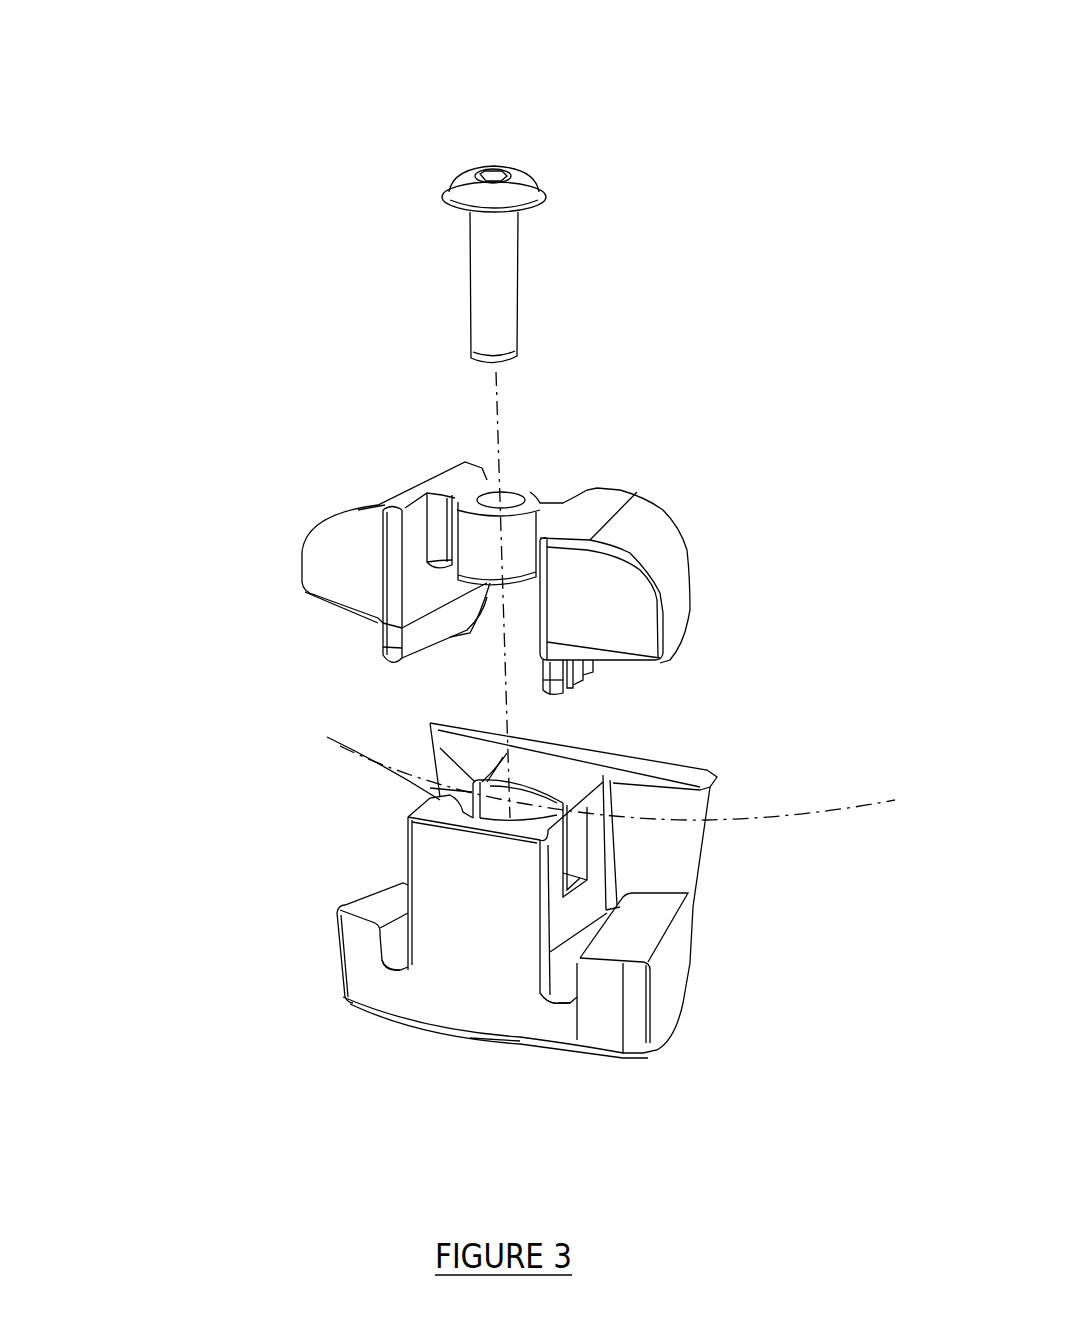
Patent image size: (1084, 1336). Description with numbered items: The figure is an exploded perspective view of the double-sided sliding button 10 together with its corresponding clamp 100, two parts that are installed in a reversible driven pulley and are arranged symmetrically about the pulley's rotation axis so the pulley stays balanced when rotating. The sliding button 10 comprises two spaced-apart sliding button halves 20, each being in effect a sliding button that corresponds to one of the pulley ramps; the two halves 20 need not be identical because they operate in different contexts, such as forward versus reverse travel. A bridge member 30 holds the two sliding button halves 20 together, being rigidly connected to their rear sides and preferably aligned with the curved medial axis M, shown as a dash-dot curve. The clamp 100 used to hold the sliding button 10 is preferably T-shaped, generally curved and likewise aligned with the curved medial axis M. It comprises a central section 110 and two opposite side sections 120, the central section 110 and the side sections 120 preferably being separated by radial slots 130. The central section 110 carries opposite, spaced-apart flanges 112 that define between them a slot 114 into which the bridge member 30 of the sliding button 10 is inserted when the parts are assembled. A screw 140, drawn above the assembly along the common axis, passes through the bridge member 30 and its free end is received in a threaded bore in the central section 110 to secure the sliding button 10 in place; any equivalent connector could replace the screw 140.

The double-sided sliding button 10 is at (205, 362).
The sliding button halves 20 is at (328, 552).
The bridge member 30 is at (447, 513).
The clamp 100 is at (228, 983).
The central section 110 is at (500, 921).
The flanges 112 is at (493, 778).
The slot 114 is at (533, 799).
The side sections 120 is at (368, 977).
The radial slots 130 is at (560, 1003).
The screw 140 is at (463, 192).
The curved medial axis M is at (728, 821).